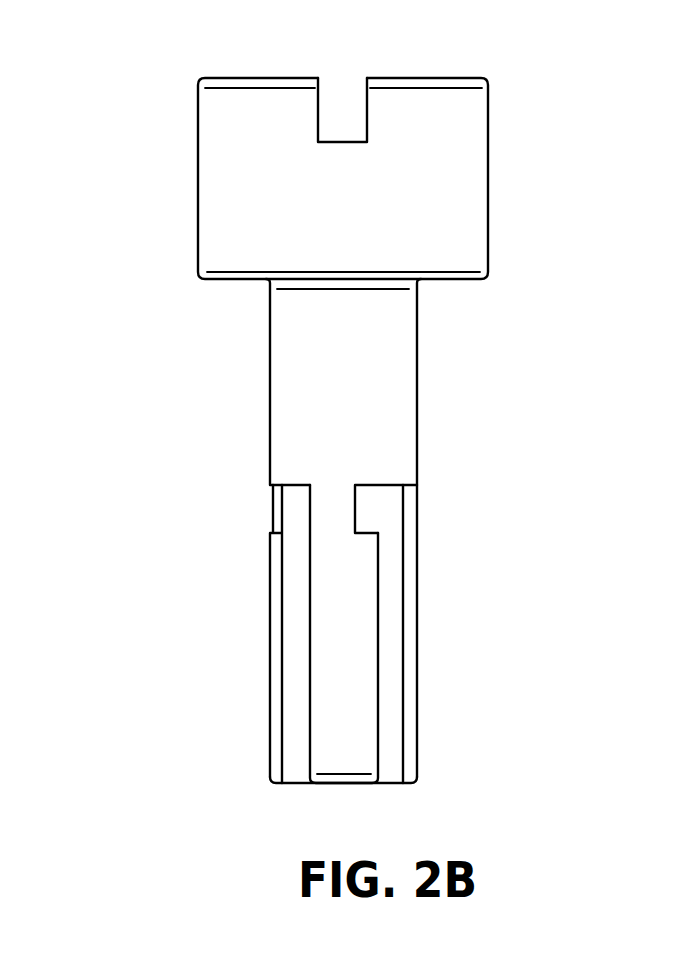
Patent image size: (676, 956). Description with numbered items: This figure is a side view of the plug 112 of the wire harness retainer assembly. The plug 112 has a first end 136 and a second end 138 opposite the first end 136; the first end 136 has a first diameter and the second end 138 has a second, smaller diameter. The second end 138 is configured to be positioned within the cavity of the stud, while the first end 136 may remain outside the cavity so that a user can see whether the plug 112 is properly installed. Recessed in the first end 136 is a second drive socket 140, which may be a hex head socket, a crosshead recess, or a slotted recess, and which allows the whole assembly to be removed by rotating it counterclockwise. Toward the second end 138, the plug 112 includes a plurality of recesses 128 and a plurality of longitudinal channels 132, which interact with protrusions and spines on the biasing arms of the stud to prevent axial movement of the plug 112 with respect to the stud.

The plug 112 is at (353, 453).
The first end 136 is at (500, 78).
The second drive socket 140 is at (330, 144).
The recesses 128 is at (365, 512).
The longitudinal channels 132 is at (383, 655).
The second end 138 is at (432, 777).